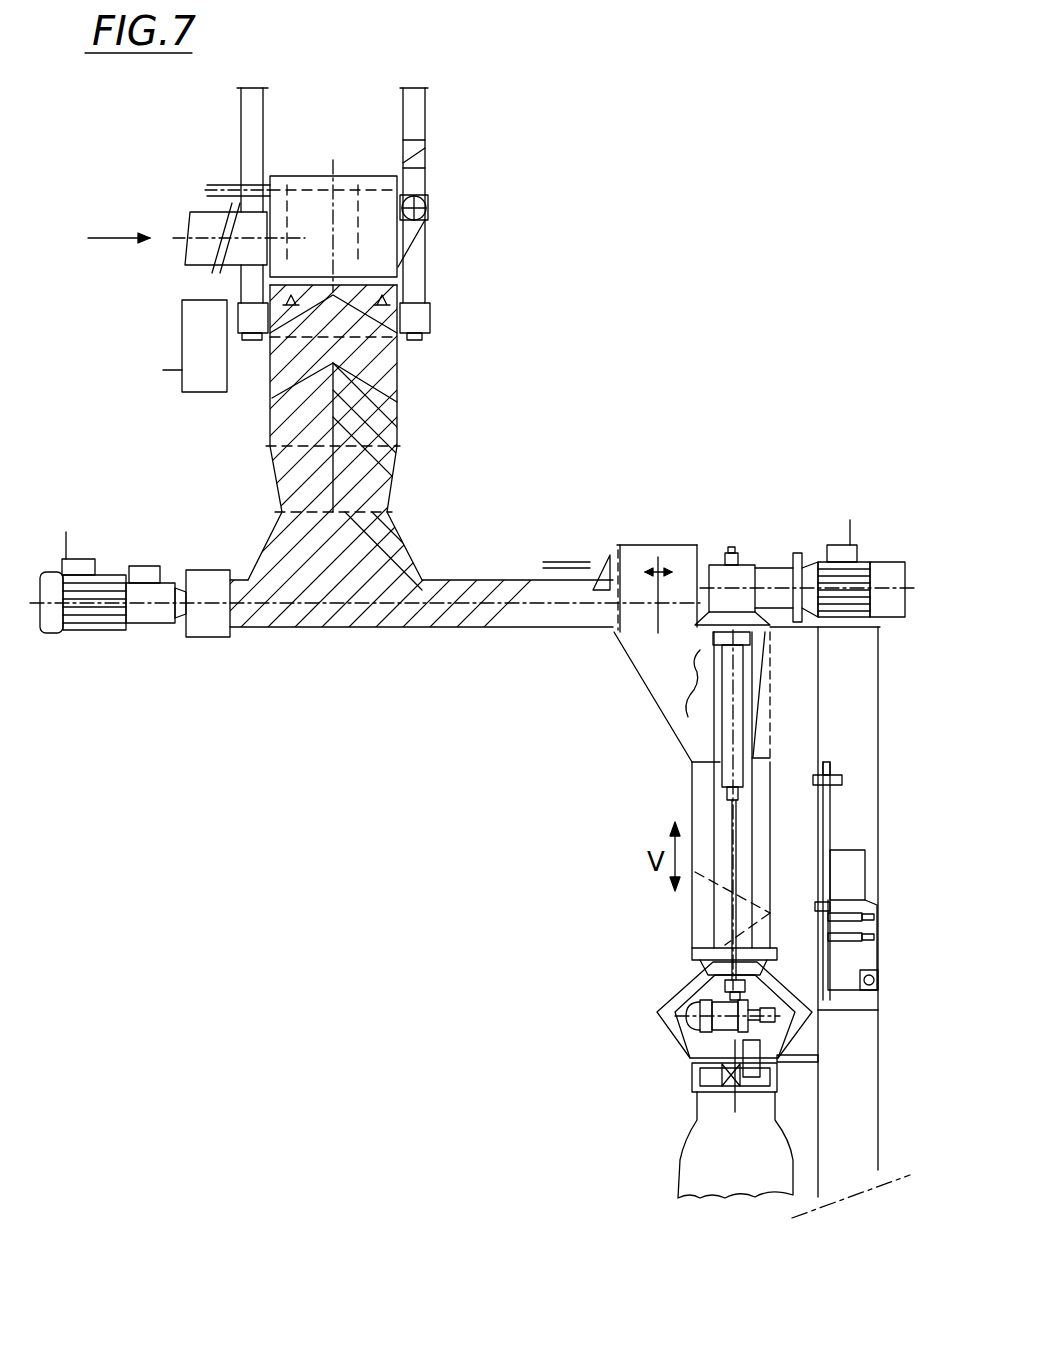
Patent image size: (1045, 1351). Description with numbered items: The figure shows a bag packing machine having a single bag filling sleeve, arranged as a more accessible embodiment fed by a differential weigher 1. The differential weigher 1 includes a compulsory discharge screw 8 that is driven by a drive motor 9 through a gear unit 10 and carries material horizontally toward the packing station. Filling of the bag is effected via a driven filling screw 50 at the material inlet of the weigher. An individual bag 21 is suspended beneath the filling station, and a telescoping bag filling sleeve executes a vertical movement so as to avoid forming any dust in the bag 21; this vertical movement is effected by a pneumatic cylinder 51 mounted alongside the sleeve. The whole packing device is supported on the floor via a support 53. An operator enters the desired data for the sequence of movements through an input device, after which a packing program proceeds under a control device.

The differential weigher 1 is at (555, 300).
The compulsory discharge screw 8 is at (452, 592).
The drive motor 9 is at (76, 632).
The gear unit 10 is at (205, 638).
The bag 21 is at (735, 1145).
The filling screw 50 is at (185, 248).
The pneumatic cylinder 51 is at (728, 718).
The support 53 is at (865, 1132).